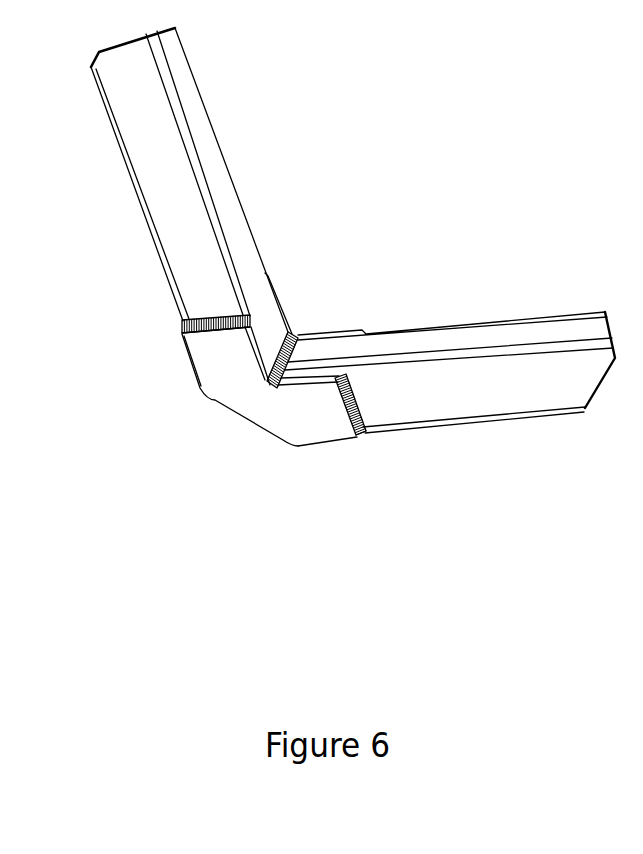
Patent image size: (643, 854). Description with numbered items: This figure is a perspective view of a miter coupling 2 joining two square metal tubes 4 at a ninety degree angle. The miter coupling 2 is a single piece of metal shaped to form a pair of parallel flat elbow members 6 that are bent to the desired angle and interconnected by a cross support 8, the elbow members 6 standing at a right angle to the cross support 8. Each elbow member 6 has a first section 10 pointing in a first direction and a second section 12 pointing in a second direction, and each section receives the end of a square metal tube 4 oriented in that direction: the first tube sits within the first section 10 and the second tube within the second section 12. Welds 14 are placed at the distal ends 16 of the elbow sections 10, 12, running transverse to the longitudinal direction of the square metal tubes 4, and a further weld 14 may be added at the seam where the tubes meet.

The miter coupling 2 is at (211, 487).
The square metal tube 4 is at (185, 232).
The elbow member 6 is at (257, 459).
The cross support 8 is at (213, 400).
The first section 10 is at (323, 418).
The second section 12 is at (226, 353).
The weld 14 is at (287, 332).
The distal end 16 is at (197, 338).